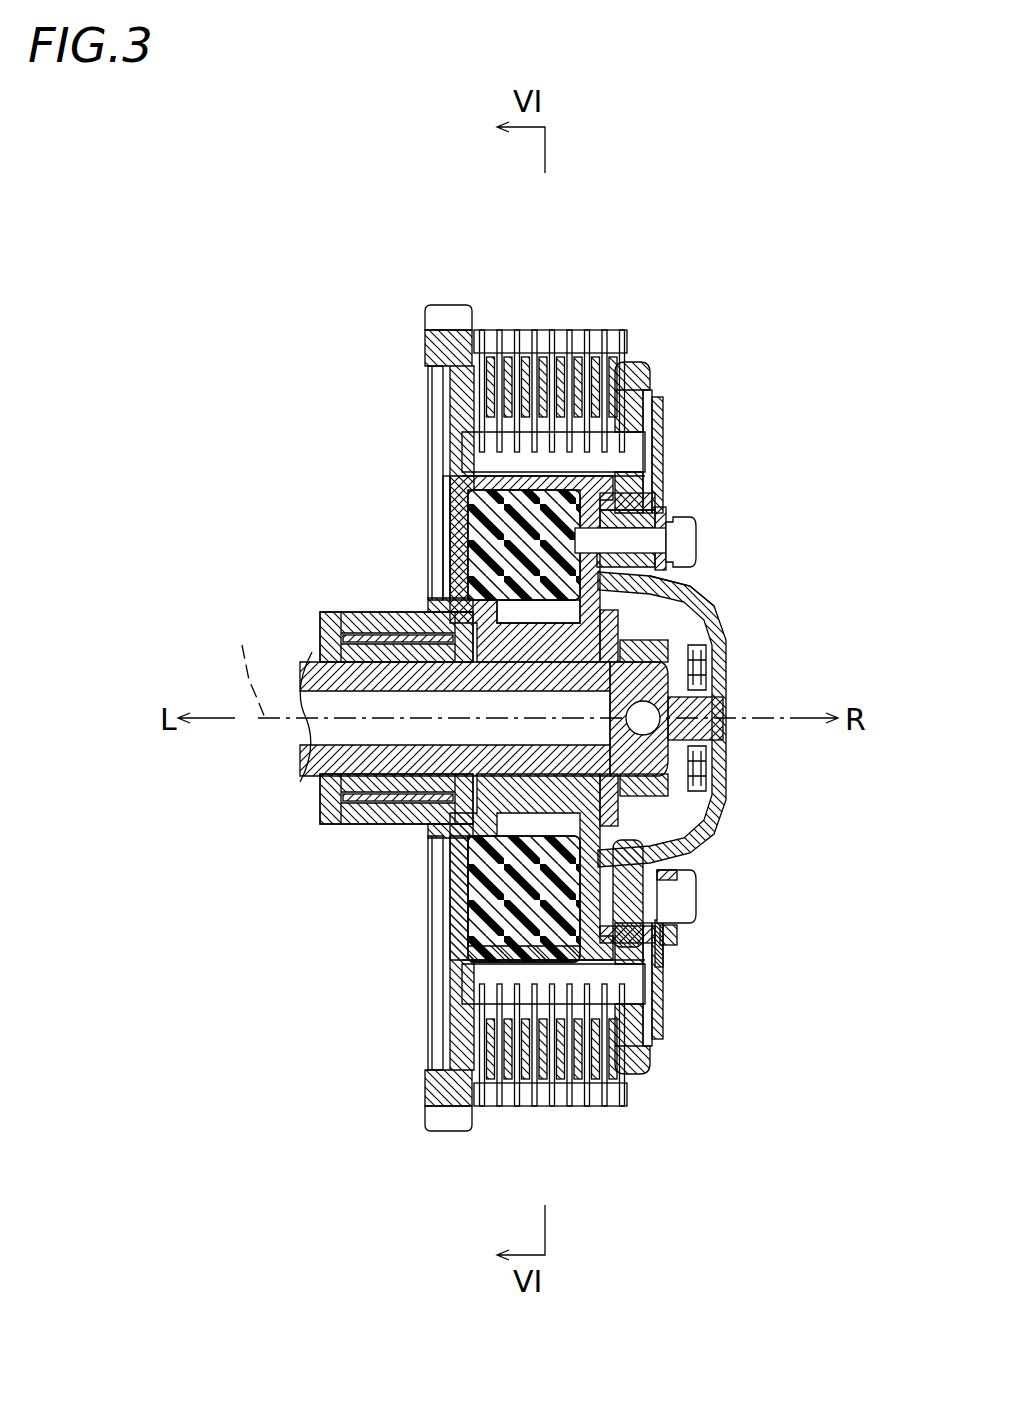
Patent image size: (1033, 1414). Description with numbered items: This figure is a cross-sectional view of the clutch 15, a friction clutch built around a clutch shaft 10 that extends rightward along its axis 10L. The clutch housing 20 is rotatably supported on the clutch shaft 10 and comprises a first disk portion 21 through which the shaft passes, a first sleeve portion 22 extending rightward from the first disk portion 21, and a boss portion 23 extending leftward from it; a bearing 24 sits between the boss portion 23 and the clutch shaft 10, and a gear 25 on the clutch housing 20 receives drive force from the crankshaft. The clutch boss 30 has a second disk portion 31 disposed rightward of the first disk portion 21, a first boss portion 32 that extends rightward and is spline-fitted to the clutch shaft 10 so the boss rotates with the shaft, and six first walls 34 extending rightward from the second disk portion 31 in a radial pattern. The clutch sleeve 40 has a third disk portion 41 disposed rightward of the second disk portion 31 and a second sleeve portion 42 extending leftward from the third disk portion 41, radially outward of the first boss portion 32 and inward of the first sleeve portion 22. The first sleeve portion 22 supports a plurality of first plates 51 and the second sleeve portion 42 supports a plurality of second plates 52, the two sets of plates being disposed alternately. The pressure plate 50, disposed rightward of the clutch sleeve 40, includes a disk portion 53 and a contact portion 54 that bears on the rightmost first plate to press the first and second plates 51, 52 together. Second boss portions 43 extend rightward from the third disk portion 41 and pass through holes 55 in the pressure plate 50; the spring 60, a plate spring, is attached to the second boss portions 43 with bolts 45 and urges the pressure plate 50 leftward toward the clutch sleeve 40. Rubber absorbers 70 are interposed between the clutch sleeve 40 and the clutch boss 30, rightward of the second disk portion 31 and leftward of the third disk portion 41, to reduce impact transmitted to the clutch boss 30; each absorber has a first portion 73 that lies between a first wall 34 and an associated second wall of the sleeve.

The clutch shaft 10 is at (300, 766).
The axis of the clutch shaft 10L is at (242, 663).
The clutch 15 is at (754, 274).
The clutch housing 20 is at (417, 347).
The first disk portion 21 is at (428, 389).
The first sleeve portion 22 is at (633, 318).
The boss portion 23 is at (432, 605).
The bearing 24 is at (344, 624).
The gear 25 is at (449, 303).
The clutch boss 30 is at (437, 513).
The second disk portion 31 is at (450, 498).
The first boss portion 32 is at (522, 612).
The first walls 34 is at (492, 556).
The clutch sleeve 40 is at (616, 843).
The third disk portion 41 is at (667, 955).
The second sleeve portion 42 is at (540, 1007).
The second boss portions 43 is at (620, 583).
The bolts 45 is at (695, 542).
The pressure plate 50 is at (739, 647).
The first plates 51 is at (580, 358).
The second plates 52 is at (606, 346).
The disk portion 53 is at (680, 603).
The contact portion 54 is at (636, 378).
The holes 55 is at (665, 512).
The spring 60 is at (663, 424).
The absorbers 70 is at (462, 500).
The first portion 73 is at (492, 917).